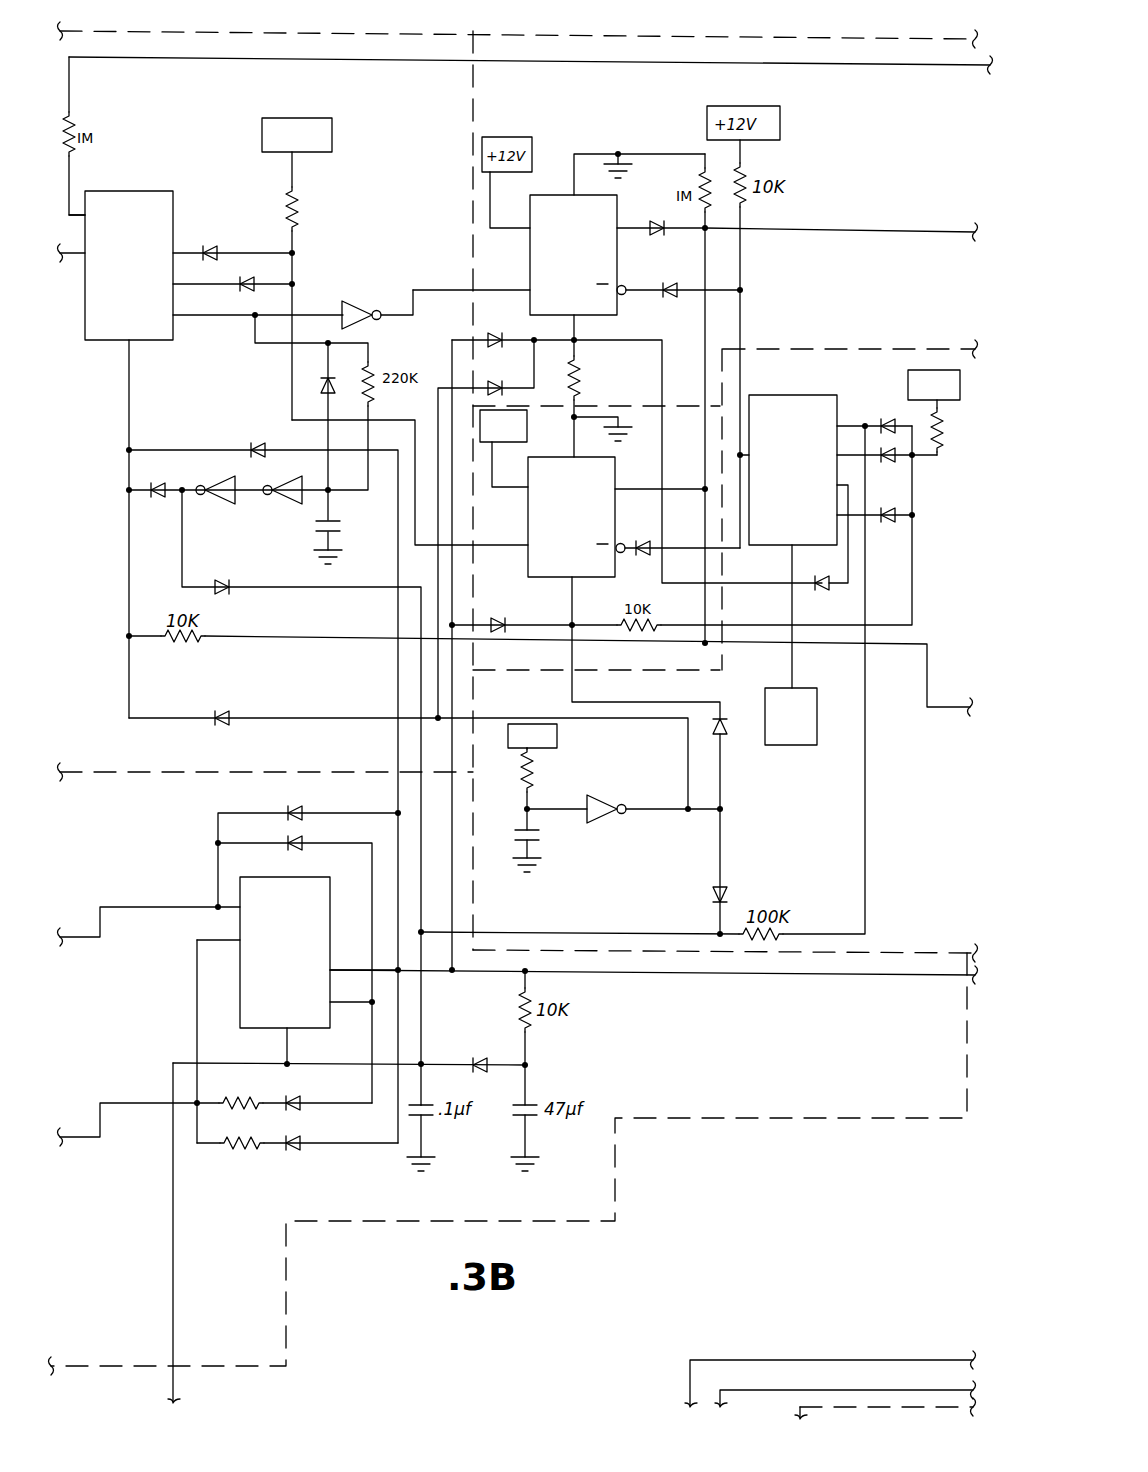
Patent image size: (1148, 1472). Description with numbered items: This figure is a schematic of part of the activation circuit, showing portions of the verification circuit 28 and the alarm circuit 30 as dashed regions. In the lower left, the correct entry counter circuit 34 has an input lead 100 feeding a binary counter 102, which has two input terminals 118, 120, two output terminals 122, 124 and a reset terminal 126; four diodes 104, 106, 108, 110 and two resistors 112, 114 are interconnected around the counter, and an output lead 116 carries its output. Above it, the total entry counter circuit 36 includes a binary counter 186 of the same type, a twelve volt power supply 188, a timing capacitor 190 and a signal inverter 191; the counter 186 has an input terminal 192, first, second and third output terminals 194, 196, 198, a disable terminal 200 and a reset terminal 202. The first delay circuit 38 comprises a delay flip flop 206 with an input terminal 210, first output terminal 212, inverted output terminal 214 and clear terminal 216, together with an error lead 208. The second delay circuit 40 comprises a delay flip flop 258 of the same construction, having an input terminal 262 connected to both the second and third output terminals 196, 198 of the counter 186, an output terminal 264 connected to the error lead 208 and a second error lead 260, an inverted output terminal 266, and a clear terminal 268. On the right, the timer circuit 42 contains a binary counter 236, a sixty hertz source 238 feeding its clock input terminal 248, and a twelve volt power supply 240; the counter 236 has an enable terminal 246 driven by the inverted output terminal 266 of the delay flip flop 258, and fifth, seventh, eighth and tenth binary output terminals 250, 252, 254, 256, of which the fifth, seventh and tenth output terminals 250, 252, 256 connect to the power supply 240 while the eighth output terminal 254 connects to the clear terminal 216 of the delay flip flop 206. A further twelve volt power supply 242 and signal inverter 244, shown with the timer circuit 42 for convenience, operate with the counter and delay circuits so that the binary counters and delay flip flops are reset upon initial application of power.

The verification circuit 28 is at (964, 1016).
The alarm circuit 30 is at (129, 27).
The correct entry counter circuit 34 is at (177, 829).
The total entry counter circuit 36 is at (253, 58).
The first delay circuit 38 is at (833, 36).
The second delay circuit 40 is at (688, 406).
The timer circuit 42 is at (830, 348).
The input lead 100 is at (110, 906).
The binary counter 102 is at (238, 924).
The diode 104 is at (297, 1100).
The diode 106 is at (300, 848).
The diode 108 is at (297, 1141).
The diode 110 is at (299, 813).
The resistor 112 is at (224, 1102).
The resistor 114 is at (223, 1150).
The output lead 116 is at (738, 976).
The input terminal 118 is at (237, 894).
The input terminal 120 is at (236, 944).
The output terminal 122 is at (332, 1002).
The output terminal 124 is at (330, 968).
The reset terminal 126 is at (288, 1034).
The binary counter 186 is at (138, 191).
The 12 volt power supply 188 is at (334, 130).
The timing capacitor 190 is at (336, 513).
The signal inverter 191 is at (362, 305).
The input terminal 192 is at (77, 258).
The first output terminal 194 is at (179, 316).
The second output terminal 196 is at (178, 285).
The third output terminal 198 is at (178, 251).
The disable terminal 200 is at (88, 208).
The reset terminal 202 is at (136, 344).
The delay flip flop 206 is at (556, 195).
The error lead 208 is at (840, 230).
The input terminal 210 is at (526, 292).
The first output terminal 212 is at (624, 226).
The inverted output terminal 214 is at (626, 298).
The clear terminal 216 is at (578, 319).
The binary counter 236 is at (773, 395).
The 60 hertz source 238 is at (782, 748).
The 12 volt power supply 240 is at (962, 385).
The 12 volt power supply 242 is at (559, 738).
The signal inverter 244 is at (605, 805).
The enable terminal 246 is at (744, 450).
The clock input terminal 248 is at (790, 550).
The fifth binary output terminal 250 is at (840, 426).
The seventh binary output terminal 252 is at (838, 453).
The eighth binary output terminal 254 is at (836, 473).
The tenth binary output terminal 256 is at (838, 544).
The delay flip flop 258 is at (545, 456).
The second error lead 260 is at (704, 647).
The input terminal 262 is at (528, 550).
The output terminal 264 is at (618, 492).
The inverted output terminal 266 is at (629, 553).
The clear terminal 268 is at (572, 582).